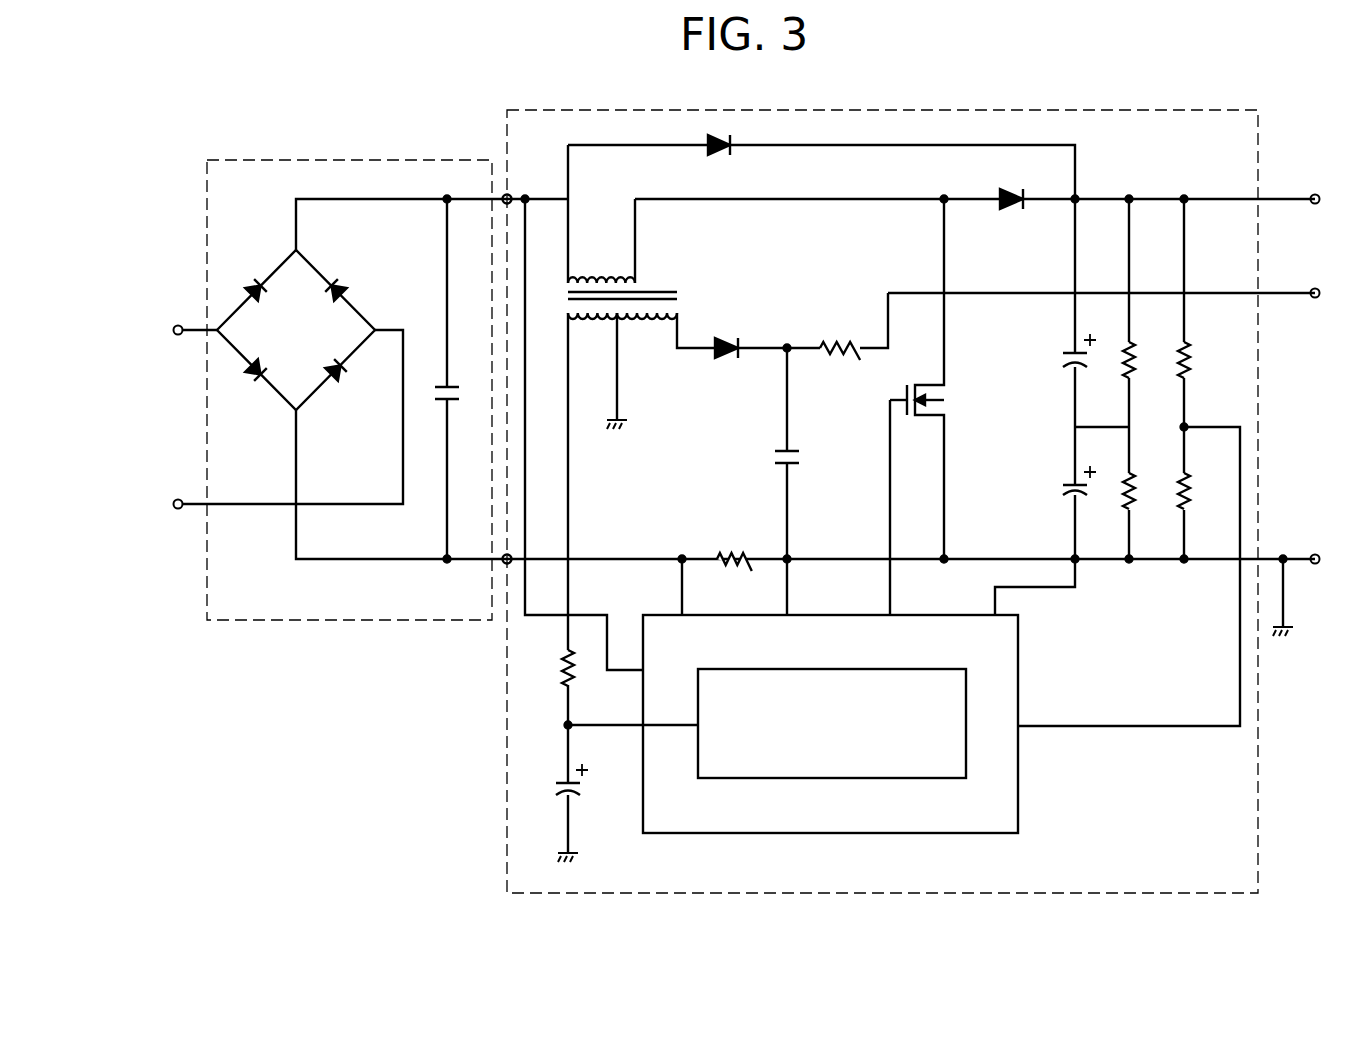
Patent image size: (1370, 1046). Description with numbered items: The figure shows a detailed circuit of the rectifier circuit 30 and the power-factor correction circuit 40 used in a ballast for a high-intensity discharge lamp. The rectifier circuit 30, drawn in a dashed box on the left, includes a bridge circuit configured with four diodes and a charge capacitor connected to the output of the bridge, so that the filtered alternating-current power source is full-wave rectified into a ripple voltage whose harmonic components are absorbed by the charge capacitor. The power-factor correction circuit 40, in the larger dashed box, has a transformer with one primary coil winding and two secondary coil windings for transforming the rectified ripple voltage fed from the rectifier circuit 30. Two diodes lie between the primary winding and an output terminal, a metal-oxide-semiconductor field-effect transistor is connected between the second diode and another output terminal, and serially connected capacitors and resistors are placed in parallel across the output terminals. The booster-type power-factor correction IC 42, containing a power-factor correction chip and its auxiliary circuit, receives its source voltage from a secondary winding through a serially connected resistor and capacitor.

The rectifier circuit 30 is at (350, 160).
The power-factor correction circuit 40 is at (882, 110).
The power-factor correction IC 42 is at (830, 754).